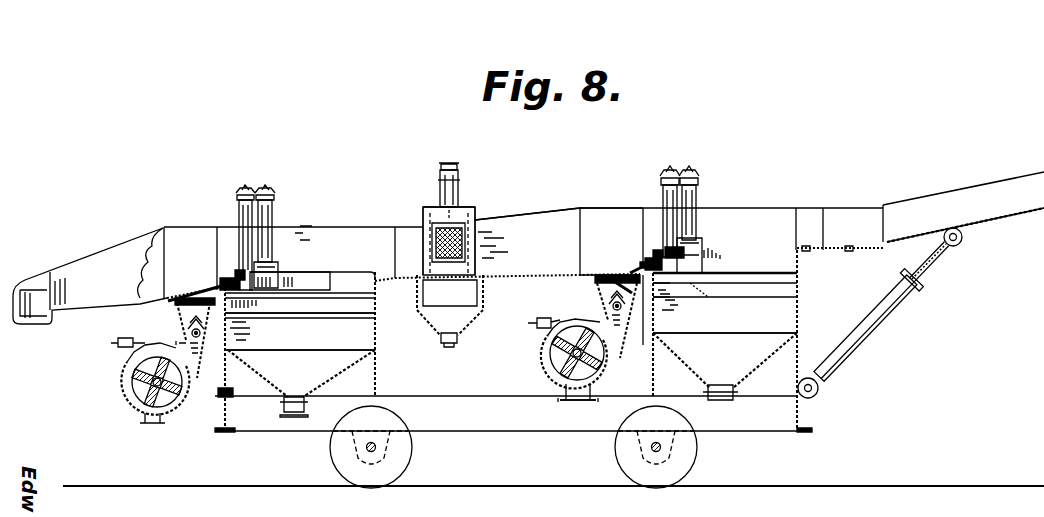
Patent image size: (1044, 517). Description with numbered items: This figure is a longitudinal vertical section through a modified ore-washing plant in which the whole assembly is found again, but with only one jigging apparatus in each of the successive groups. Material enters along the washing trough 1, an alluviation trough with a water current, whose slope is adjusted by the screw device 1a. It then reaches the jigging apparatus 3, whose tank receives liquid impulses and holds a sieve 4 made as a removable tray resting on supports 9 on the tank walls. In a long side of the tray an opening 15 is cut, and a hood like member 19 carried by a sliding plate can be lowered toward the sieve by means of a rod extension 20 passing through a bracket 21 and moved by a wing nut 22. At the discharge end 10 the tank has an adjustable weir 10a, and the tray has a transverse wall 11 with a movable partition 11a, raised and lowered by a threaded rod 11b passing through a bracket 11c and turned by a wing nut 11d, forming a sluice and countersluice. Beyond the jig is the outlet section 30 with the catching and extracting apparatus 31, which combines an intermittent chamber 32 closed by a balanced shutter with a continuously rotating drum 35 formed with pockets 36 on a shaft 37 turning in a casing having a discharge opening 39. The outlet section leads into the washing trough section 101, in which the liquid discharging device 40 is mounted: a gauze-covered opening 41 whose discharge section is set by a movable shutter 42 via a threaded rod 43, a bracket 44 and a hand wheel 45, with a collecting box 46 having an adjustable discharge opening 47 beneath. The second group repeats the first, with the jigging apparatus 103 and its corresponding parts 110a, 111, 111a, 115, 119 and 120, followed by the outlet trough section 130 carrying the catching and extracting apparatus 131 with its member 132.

The washing trough 1 is at (1036, 176).
The screw device 1a is at (918, 288).
The jigging apparatus 3 is at (805, 316).
The sieve 4 is at (777, 277).
The support 9 is at (734, 297).
The discharge end 10 is at (645, 296).
The adjustable weir 10a is at (657, 293).
The transverse wall 11 is at (660, 255).
The movable partition 11a is at (677, 243).
The threaded rod 11b is at (665, 202).
The bracket 11c is at (665, 178).
The wing nut 11d is at (666, 176).
The opening 15 is at (695, 285).
The hood like member 19 is at (700, 255).
The rod extension 20 is at (694, 217).
The bracket 21 is at (693, 190).
The wing nut 22 is at (689, 176).
The outlet section 30 is at (597, 212).
The catching and extracting apparatus 31 is at (588, 306).
The chamber 32 is at (635, 266).
The drum 35 is at (553, 357).
The pockets 36 is at (557, 386).
The shaft 37 is at (553, 348).
The discharge opening 39 is at (572, 397).
The liquid discharging device 40 is at (421, 199).
The opening 41 is at (436, 238).
The movable shutter 42 is at (438, 222).
The threaded rod 43 is at (458, 198).
The bracket 44 is at (460, 182).
The hand wheel 45 is at (456, 169).
The collecting box 46 is at (470, 322).
The adjustable discharge opening 47 is at (446, 341).
The washing trough section 101 is at (537, 220).
The jigging apparatus 103 is at (384, 340).
The chamber 110a is at (236, 324).
The valve 111 is at (233, 280).
The partition 111a is at (240, 308).
The base 115 is at (280, 286).
The pipe base 119 is at (282, 270).
The pipes 120 is at (270, 227).
The outlet trough section 130 is at (190, 229).
The catching and extracting apparatus 131 is at (169, 328).
The flap 132 is at (213, 292).